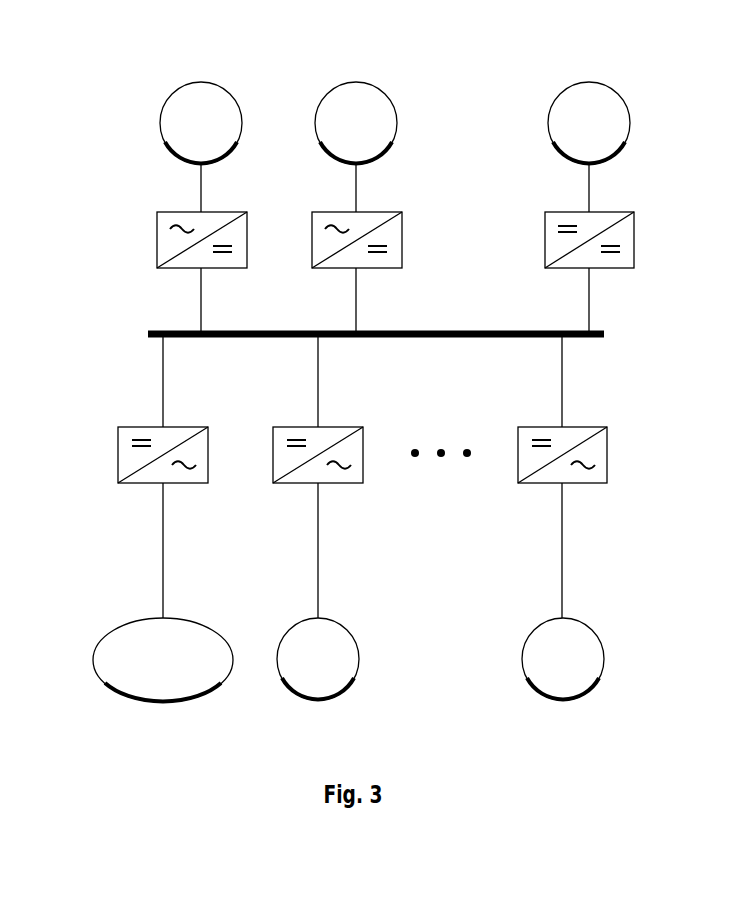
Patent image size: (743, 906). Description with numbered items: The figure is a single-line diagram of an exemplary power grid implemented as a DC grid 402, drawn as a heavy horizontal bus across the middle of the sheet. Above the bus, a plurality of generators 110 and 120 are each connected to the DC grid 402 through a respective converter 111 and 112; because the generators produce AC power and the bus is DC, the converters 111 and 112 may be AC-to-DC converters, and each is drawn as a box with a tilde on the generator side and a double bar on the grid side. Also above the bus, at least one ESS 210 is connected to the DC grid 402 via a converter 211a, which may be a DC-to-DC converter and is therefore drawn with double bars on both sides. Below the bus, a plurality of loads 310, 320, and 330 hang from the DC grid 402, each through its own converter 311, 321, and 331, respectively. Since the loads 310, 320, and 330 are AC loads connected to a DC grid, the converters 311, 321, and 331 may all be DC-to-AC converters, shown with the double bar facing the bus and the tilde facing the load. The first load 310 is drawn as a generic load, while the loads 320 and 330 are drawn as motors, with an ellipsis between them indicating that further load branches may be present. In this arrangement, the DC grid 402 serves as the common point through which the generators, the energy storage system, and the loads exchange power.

The generator 110 is at (201, 82).
The generator 120 is at (356, 82).
The ESS 210 is at (589, 82).
The converter 111 is at (247, 268).
The converter 112 is at (402, 268).
The converter 211a is at (634, 268).
The DC grid 402 is at (604, 334).
The converter 311 is at (208, 483).
The converter 321 is at (363, 483).
The converter 331 is at (607, 483).
The load 310 is at (92, 658).
The load 320 is at (359, 657).
The load 330 is at (604, 657).